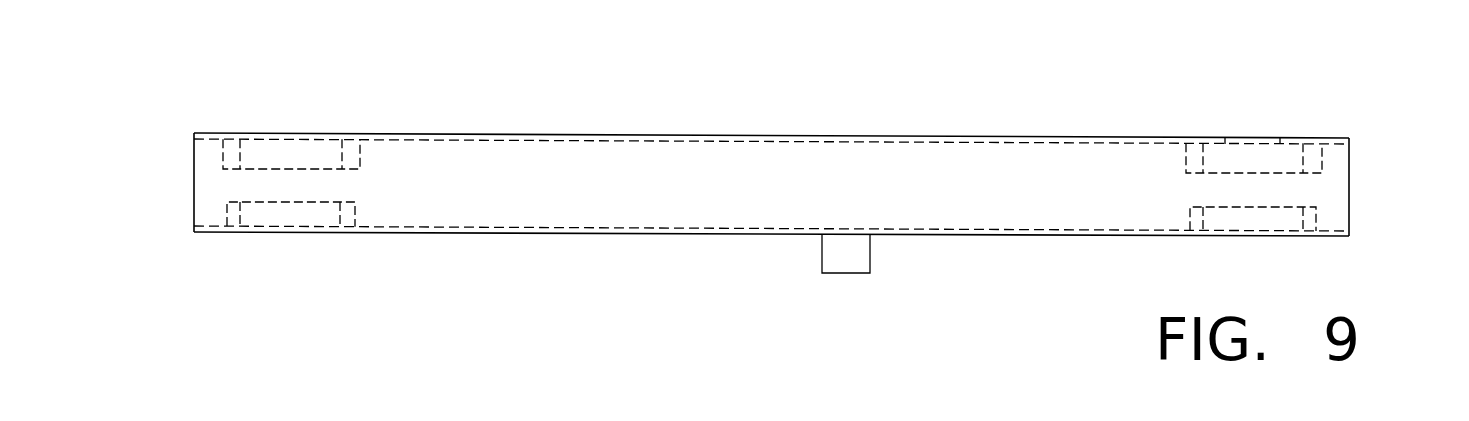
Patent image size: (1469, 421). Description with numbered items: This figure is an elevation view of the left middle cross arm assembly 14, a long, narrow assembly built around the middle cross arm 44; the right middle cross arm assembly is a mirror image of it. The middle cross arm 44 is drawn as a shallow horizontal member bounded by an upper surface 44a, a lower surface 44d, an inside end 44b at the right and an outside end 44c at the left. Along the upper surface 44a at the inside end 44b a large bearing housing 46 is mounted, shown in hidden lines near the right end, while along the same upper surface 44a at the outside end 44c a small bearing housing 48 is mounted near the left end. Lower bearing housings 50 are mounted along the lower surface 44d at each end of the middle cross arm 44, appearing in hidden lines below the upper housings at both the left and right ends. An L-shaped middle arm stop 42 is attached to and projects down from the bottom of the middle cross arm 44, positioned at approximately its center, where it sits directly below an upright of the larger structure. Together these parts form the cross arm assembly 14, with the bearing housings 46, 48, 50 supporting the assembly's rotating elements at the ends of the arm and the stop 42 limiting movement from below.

The left middle cross arm assembly 14 is at (777, 186).
The middle arm stop 42 is at (845, 262).
The middle cross arm 44 is at (801, 149).
The upper surface 44a is at (547, 135).
The inside end 44b is at (1349, 192).
The outside end 44c is at (193, 183).
The lower surface 44d is at (535, 237).
The large bearing housing 46 is at (1186, 167).
The small bearing housing 48 is at (223, 160).
The lower bearing housing 50 is at (355, 212).